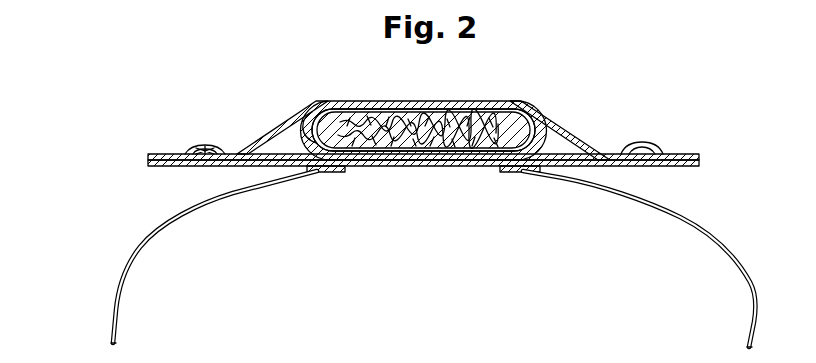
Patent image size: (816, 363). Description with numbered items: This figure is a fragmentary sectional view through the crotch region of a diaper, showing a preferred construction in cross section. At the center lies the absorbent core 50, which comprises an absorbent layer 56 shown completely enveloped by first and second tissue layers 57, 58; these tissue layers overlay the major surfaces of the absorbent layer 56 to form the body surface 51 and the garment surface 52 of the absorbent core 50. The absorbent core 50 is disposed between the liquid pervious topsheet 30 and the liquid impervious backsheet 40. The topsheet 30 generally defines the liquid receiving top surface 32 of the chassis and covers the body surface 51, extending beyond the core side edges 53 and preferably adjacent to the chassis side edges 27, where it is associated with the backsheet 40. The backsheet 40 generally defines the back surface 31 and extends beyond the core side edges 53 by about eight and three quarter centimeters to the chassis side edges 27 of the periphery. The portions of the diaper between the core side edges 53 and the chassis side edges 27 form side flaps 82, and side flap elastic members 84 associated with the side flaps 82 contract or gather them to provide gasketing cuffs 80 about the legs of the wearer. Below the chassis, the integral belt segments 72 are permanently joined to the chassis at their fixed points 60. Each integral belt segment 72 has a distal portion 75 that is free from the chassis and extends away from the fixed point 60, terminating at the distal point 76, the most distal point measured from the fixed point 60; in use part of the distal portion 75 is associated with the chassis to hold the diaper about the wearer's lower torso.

The chassis side edges 27 is at (150, 158).
The topsheet 30 is at (423, 137).
The back surface 31 is at (448, 163).
The liquid receiving top surface 32 is at (352, 108).
The backsheet 40 is at (407, 163).
The absorbent core 50 is at (431, 103).
The body surface 51 is at (340, 114).
The garment surface 52 is at (371, 163).
The core side edges 53 is at (300, 136).
The absorbent layer 56 is at (490, 113).
The first tissue layer 57 is at (470, 110).
The second tissue layer 58 is at (473, 163).
The fixed point 60 is at (334, 168).
The integral belt segment 72 is at (433, 260).
The distal portion 75 is at (166, 252).
The distal point 76 is at (114, 347).
The gasketing cuff 80 is at (423, 107).
The side flap 82 is at (243, 156).
The side flap elastic member 84 is at (203, 150).